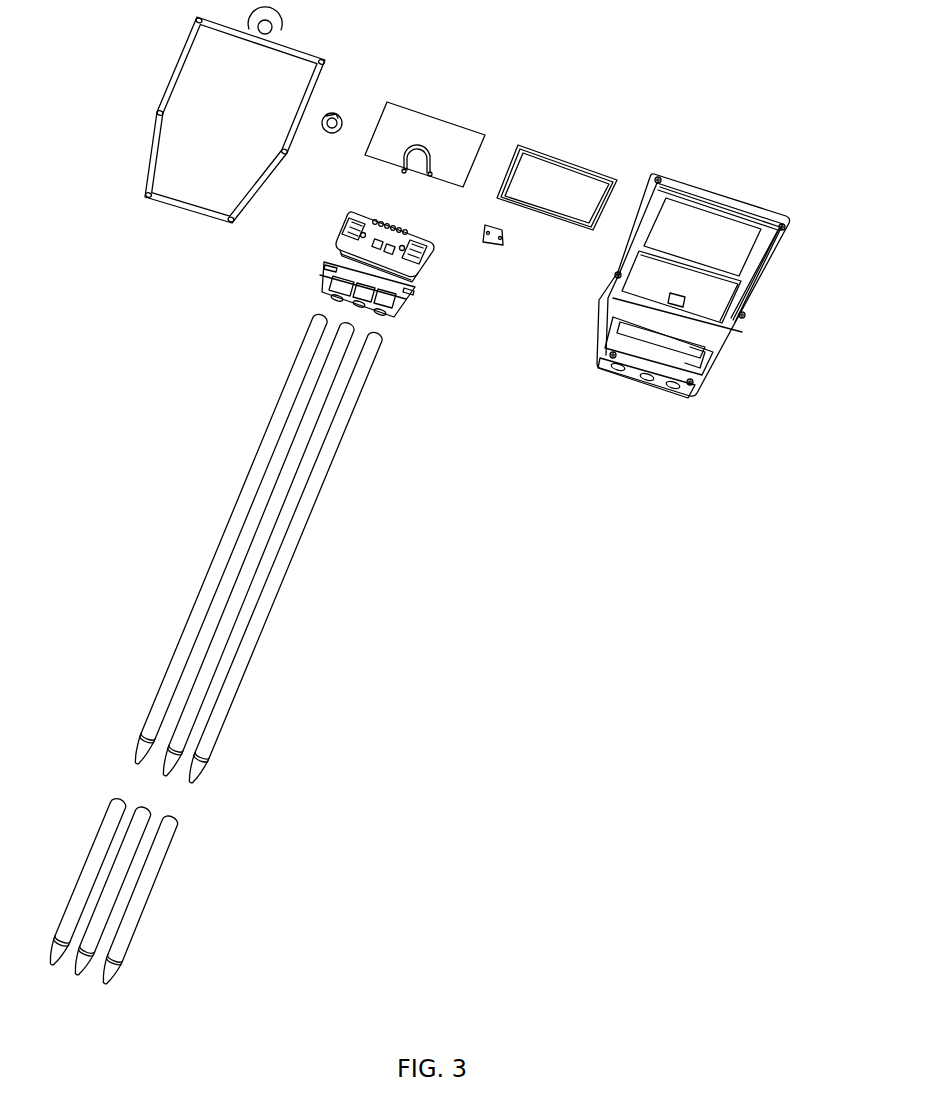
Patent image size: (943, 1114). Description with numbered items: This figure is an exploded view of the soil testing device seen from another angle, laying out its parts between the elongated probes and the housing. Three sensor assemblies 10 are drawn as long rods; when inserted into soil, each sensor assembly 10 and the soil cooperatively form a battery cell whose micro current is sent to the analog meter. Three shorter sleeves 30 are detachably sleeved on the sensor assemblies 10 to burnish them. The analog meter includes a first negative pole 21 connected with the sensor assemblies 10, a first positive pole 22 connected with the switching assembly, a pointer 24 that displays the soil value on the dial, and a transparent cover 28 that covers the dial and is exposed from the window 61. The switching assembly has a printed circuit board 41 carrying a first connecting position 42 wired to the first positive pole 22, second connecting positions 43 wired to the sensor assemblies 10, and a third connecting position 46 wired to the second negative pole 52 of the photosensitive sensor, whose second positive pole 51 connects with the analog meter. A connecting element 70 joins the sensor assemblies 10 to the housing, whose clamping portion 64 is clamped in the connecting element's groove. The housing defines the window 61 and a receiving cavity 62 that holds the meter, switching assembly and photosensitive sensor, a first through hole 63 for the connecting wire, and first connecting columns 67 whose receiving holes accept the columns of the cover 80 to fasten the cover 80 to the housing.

The sensor assembly 10 is at (270, 610).
The first negative pole 21 is at (430, 176).
The first positive pole 22 is at (418, 145).
The pointer 24 is at (341, 121).
The transparent cover 28 is at (530, 148).
The sleeve 30 is at (176, 842).
The printed circuit board 41 is at (424, 258).
The first connecting position 42 is at (372, 222).
The second connecting position 43 is at (389, 226).
The third connecting position 46 is at (409, 230).
The second positive pole 51 is at (490, 233).
The second negative pole 52 is at (500, 240).
The window 61 is at (718, 222).
The receiving cavity 62 is at (760, 262).
The first through hole 63 is at (673, 388).
The clamping portion 64 is at (715, 372).
The first connecting column 67 is at (657, 177).
The connecting element 70 is at (384, 313).
The cover 80 is at (210, 225).